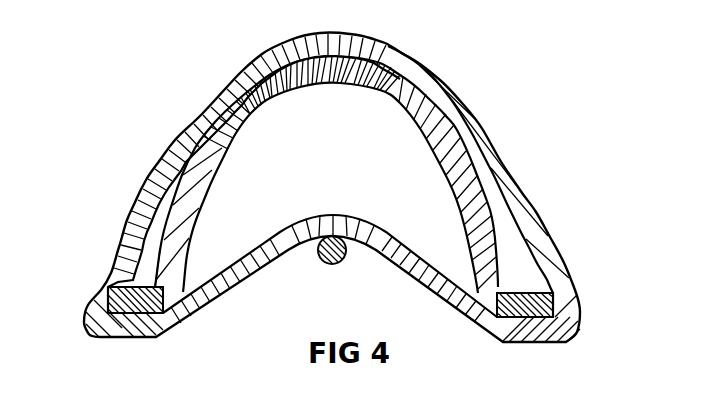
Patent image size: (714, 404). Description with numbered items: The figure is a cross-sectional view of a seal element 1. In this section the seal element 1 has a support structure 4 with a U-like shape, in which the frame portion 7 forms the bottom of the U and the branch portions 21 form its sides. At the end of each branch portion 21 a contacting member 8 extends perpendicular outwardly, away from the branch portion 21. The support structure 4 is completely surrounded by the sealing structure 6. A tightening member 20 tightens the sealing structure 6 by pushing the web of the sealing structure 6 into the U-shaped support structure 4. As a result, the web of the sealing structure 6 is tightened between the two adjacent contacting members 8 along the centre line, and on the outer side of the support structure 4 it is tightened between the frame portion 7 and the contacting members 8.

The seal element 1 is at (482, 122).
The support structure 4 is at (242, 88).
The sealing structure 6 is at (162, 157).
The frame portion 7 is at (395, 70).
The contacting member 8 is at (112, 301).
The tightening member 20 is at (328, 262).
The branch portion 21 is at (162, 230).